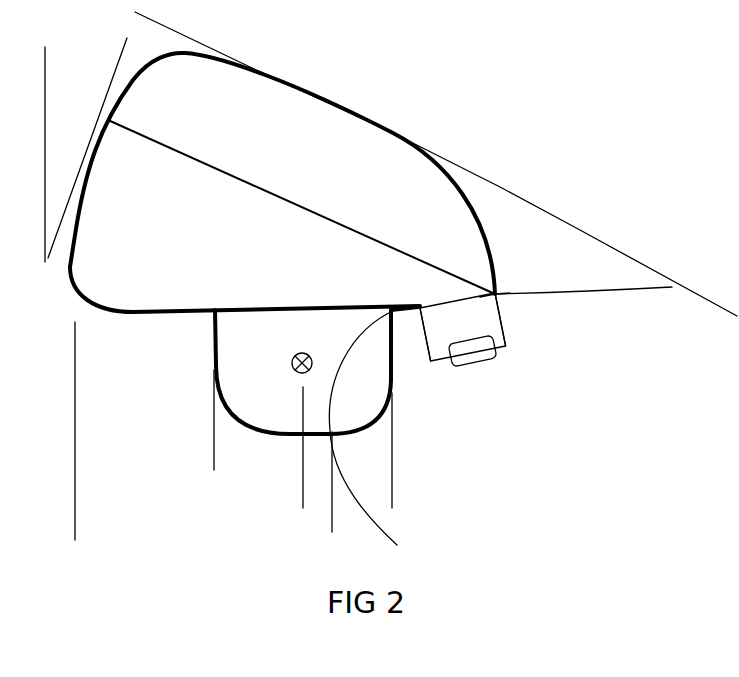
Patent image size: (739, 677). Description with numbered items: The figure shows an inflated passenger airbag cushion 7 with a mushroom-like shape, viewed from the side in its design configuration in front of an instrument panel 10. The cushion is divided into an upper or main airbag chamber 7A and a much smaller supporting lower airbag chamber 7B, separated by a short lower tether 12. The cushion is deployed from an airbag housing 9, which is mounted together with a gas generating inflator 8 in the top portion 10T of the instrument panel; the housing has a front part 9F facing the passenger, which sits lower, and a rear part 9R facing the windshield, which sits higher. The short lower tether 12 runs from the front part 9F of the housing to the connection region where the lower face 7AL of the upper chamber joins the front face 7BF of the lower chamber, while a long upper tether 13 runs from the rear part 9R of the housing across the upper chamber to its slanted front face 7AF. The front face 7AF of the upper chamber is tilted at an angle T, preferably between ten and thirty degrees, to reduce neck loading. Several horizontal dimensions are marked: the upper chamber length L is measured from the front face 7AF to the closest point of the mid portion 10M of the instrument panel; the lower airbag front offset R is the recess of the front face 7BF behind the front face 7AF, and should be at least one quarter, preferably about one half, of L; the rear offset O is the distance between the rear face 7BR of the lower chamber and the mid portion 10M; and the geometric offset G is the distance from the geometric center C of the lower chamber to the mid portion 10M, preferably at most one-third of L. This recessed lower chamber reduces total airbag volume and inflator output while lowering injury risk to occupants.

The airbag cushion 7 is at (58, 282).
The upper airbag chamber 7A is at (282, 205).
The front face of the upper airbag chamber 7AF is at (73, 262).
The lower face of the upper airbag chamber 7AL is at (190, 316).
The lower airbag chamber 7B is at (317, 391).
The front face of the lower airbag chamber 7BF is at (213, 353).
The rear face of the lower airbag chamber 7BR is at (392, 390).
The gas generating inflator 8 is at (483, 368).
The airbag housing 9 is at (442, 363).
The front part of the airbag housing 9F is at (422, 313).
The rear part of the airbag housing 9R is at (500, 303).
The instrument panel 10 is at (530, 290).
The top portion of the instrument panel 10T is at (505, 290).
The mid portion of the instrument panel 10M is at (357, 428).
The short lower tether 12 is at (325, 305).
The long upper tether 13 is at (318, 212).
The geometric center of the lower airbag chamber C is at (311, 356).
The angle of the slanted front face T is at (92, 127).
The lower airbag front offset R is at (214, 455).
The upper airbag chamber length L is at (75, 520).
The lower airbag chamber geometric offset G is at (332, 488).
The lower airbag chamber rear offset O is at (392, 488).